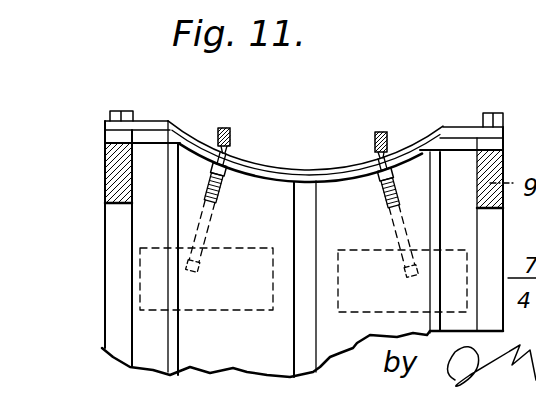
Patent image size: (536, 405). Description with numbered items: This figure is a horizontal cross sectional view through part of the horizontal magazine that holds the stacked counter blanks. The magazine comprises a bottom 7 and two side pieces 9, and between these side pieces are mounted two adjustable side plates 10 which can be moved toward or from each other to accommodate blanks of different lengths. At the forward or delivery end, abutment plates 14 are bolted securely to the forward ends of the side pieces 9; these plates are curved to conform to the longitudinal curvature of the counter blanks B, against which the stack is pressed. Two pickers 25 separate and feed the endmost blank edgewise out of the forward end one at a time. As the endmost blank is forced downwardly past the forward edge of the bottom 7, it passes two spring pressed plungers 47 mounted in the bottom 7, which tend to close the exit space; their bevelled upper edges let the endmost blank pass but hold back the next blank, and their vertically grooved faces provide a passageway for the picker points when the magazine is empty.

The side piece 9 is at (105, 182).
The abutment plate 14 is at (170, 123).
The counter blank B is at (270, 170).
The adjustable side plate 10 is at (172, 348).
The bottom 7 is at (251, 363).
The picker 25 is at (232, 133).
The spring pressed plunger 47 is at (228, 178).